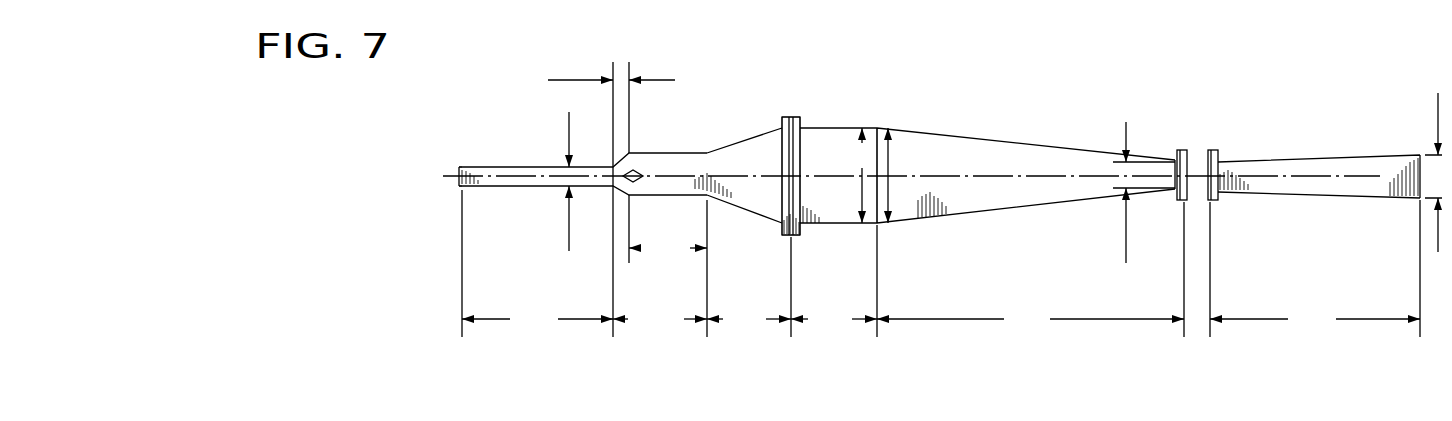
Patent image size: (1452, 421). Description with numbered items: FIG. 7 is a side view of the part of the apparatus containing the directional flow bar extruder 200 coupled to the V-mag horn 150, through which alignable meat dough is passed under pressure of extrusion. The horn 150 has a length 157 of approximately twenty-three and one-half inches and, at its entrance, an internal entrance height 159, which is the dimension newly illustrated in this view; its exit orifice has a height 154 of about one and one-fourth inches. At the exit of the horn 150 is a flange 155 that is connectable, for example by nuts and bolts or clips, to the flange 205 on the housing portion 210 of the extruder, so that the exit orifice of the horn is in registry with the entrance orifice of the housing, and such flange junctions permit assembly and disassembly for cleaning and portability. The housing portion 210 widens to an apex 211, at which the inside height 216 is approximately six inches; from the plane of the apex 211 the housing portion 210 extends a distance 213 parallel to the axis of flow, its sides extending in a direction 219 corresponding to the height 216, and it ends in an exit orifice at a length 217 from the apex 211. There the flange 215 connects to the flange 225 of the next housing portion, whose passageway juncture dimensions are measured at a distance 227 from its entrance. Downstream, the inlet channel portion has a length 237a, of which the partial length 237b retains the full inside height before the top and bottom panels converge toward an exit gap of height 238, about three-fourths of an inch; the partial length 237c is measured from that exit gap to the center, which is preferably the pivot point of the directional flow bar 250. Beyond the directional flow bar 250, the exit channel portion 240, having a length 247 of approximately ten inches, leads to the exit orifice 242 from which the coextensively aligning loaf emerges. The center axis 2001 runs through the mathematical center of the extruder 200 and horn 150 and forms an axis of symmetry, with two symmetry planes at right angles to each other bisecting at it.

The directional flow bar extruder 200 is at (459, 163).
The exit orifice 242 is at (456, 186).
The exit channel portion 240 is at (527, 166).
The directional flow bar 250 is at (641, 172).
The height 238 is at (569, 251).
The length 237a is at (660, 319).
The partial length 237b is at (668, 248).
The partial length 237c is at (572, 80).
The length 247 is at (537, 319).
The distance 227 is at (749, 319).
The flange 225 is at (783, 117).
The flange 215 is at (800, 117).
The length 217 is at (834, 319).
The direction 219 is at (851, 175).
The height 216 is at (888, 155).
The apex 211 is at (877, 128).
The housing portion 210 is at (973, 150).
The center axis 2001 is at (1027, 173).
The distance 213 is at (1030, 319).
The height 154 is at (1126, 263).
The flange 205 is at (1178, 150).
The flange 155 is at (1215, 150).
The V-mag horn 150 is at (1353, 200).
The internal entrance height 159 is at (1438, 93).
The length 157 is at (1315, 319).